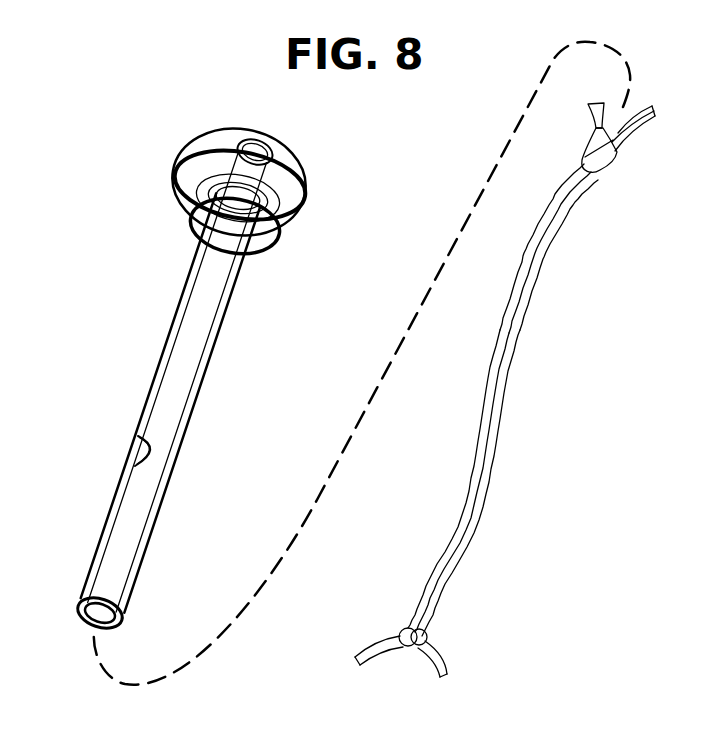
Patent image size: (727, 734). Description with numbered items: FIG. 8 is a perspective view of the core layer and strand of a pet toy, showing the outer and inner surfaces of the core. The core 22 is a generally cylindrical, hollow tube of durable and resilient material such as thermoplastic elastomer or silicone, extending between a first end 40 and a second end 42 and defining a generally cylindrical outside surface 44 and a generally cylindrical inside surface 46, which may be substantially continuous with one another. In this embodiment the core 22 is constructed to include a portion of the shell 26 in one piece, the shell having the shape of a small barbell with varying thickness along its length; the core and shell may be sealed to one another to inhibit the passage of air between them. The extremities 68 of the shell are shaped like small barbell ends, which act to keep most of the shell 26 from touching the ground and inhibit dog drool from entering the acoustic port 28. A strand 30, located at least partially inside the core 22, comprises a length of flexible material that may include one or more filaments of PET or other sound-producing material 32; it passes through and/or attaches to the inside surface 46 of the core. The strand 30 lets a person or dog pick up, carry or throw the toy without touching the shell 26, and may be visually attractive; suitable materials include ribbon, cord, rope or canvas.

The core 22 is at (210, 357).
The shell 26 is at (162, 197).
The acoustic port 28 is at (268, 136).
The strand 30 is at (568, 208).
The sound-producing material 32 is at (493, 397).
The first end 40 is at (286, 267).
The second end 42 is at (93, 622).
The outside surface 44 is at (142, 415).
The inside surface 46 is at (150, 455).
The extremities 68 is at (217, 143).